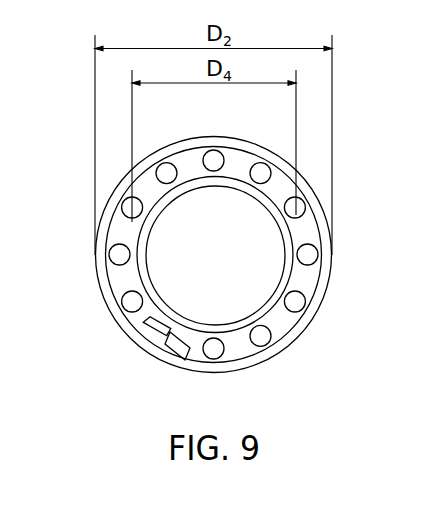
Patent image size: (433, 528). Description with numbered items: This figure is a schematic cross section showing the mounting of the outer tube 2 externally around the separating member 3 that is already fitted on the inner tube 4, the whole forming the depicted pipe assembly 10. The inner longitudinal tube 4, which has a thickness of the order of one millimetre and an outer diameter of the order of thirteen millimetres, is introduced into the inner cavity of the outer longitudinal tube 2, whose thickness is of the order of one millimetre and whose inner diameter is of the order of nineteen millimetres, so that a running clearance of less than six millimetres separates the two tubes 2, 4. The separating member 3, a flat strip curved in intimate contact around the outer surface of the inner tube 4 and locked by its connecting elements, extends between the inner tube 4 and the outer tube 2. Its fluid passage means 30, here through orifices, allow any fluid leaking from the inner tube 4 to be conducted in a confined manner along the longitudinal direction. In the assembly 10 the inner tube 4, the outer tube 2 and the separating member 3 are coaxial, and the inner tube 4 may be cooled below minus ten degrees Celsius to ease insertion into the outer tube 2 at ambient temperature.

The rolling bearing 10 is at (82, 249).
The outer longitudinal tube 2 is at (330, 275).
The separating member 3 is at (306, 280).
The inner longitudinal tube 4 is at (287, 268).
The fluid passage means 30 is at (173, 181).